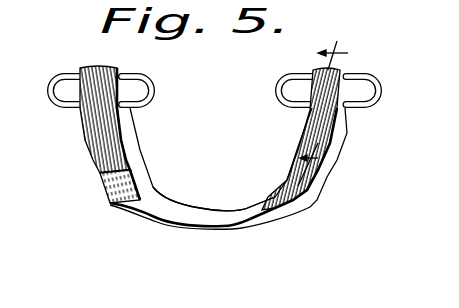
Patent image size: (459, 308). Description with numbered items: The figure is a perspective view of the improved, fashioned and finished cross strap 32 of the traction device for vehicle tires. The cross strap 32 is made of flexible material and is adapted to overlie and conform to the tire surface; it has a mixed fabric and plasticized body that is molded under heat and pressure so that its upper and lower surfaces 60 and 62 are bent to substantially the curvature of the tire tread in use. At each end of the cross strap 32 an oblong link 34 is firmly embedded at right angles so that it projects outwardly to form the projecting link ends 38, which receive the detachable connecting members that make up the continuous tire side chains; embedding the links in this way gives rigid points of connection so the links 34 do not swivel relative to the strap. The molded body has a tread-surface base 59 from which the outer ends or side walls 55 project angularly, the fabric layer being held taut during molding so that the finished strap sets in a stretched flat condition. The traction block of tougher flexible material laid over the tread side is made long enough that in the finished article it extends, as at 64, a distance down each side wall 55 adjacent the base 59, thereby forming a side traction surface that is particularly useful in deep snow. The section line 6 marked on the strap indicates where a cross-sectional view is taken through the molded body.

The section line 6- 6 is at (321, 105).
The cross strap 32 is at (210, 228).
The oblong link 34 is at (75, 77).
The projecting link end 38 is at (57, 102).
The side wall 55 is at (138, 172).
The molded base 59 is at (200, 214).
The upper surface 60 is at (270, 197).
The lower surface 62 is at (247, 225).
The side traction surface extension 64 is at (107, 189).